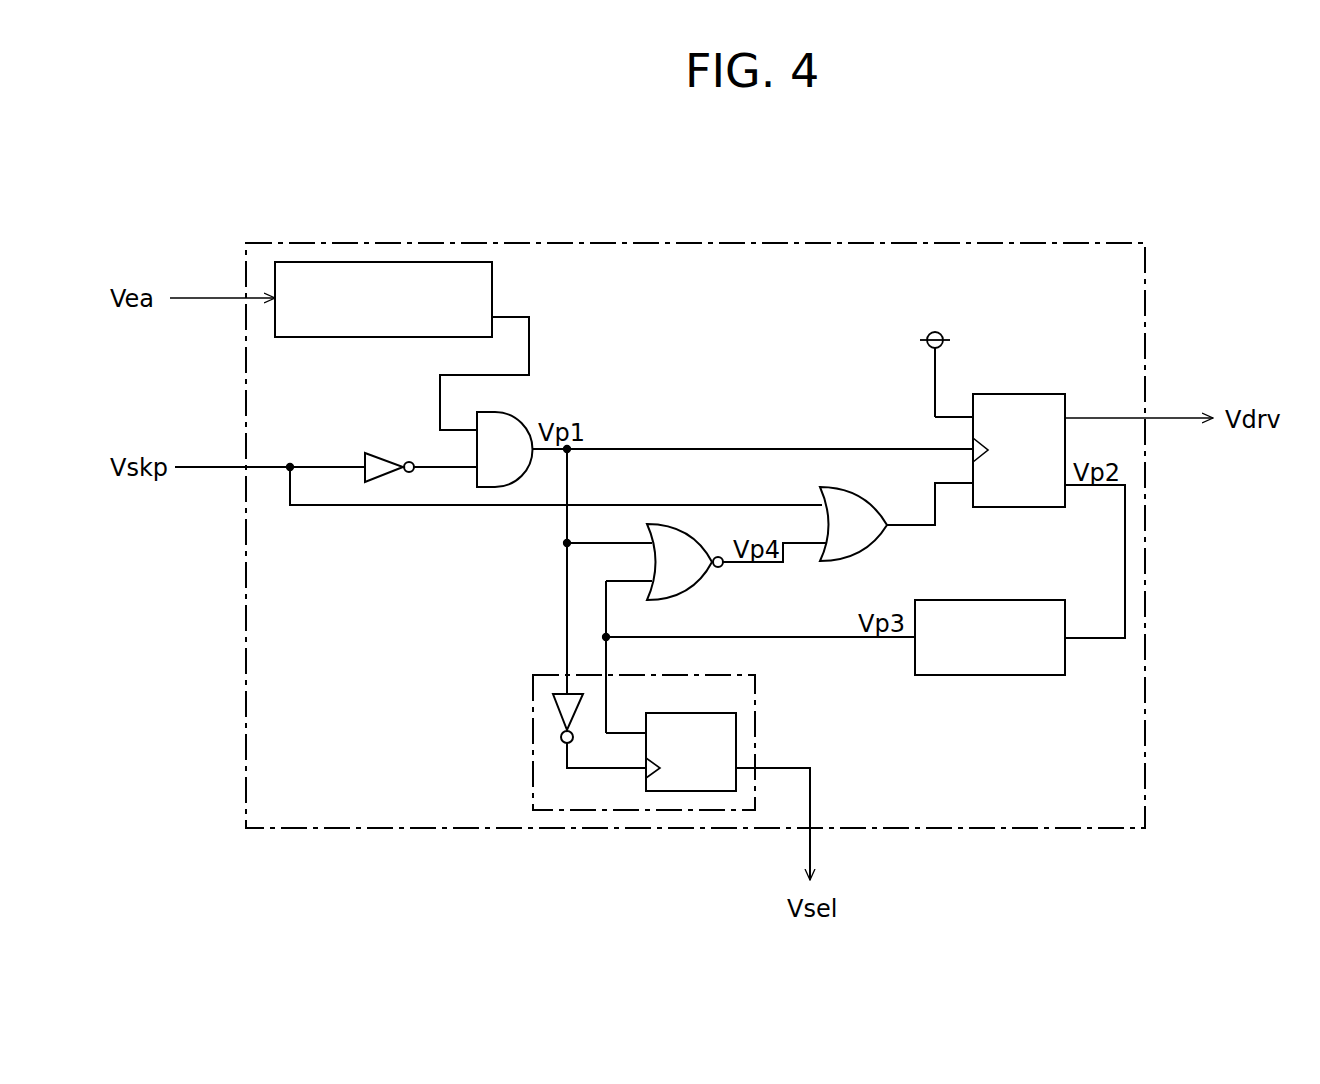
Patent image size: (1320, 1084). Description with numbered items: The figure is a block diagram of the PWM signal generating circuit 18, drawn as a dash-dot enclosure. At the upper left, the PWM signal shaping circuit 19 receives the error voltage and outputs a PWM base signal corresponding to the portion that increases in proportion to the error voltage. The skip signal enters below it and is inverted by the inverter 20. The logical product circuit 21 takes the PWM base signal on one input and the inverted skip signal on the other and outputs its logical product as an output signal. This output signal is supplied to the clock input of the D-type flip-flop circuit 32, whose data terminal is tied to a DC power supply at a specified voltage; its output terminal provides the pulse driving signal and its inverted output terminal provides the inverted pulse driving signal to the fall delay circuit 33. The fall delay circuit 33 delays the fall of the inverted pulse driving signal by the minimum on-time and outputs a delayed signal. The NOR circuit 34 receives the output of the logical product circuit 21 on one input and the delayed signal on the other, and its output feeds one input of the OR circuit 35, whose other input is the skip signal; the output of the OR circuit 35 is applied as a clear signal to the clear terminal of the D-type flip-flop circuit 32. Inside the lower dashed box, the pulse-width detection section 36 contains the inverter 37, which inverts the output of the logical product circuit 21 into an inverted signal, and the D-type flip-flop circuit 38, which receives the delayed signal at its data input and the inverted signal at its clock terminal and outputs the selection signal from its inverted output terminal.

The PWM signal generating circuit 18 is at (722, 243).
The PWM signal shaping circuit 19 is at (376, 262).
The inverter 20 is at (385, 453).
The logical product circuit 21 is at (523, 432).
The D-type flip-flop circuit 32 is at (1020, 394).
The fall delay circuit 33 is at (1000, 600).
The NOR circuit 34 is at (692, 582).
The OR circuit 35 is at (862, 549).
The pulse-width detection section 36 is at (533, 780).
The inverter 37 is at (553, 715).
The D-type flip-flop circuit 38 is at (740, 728).